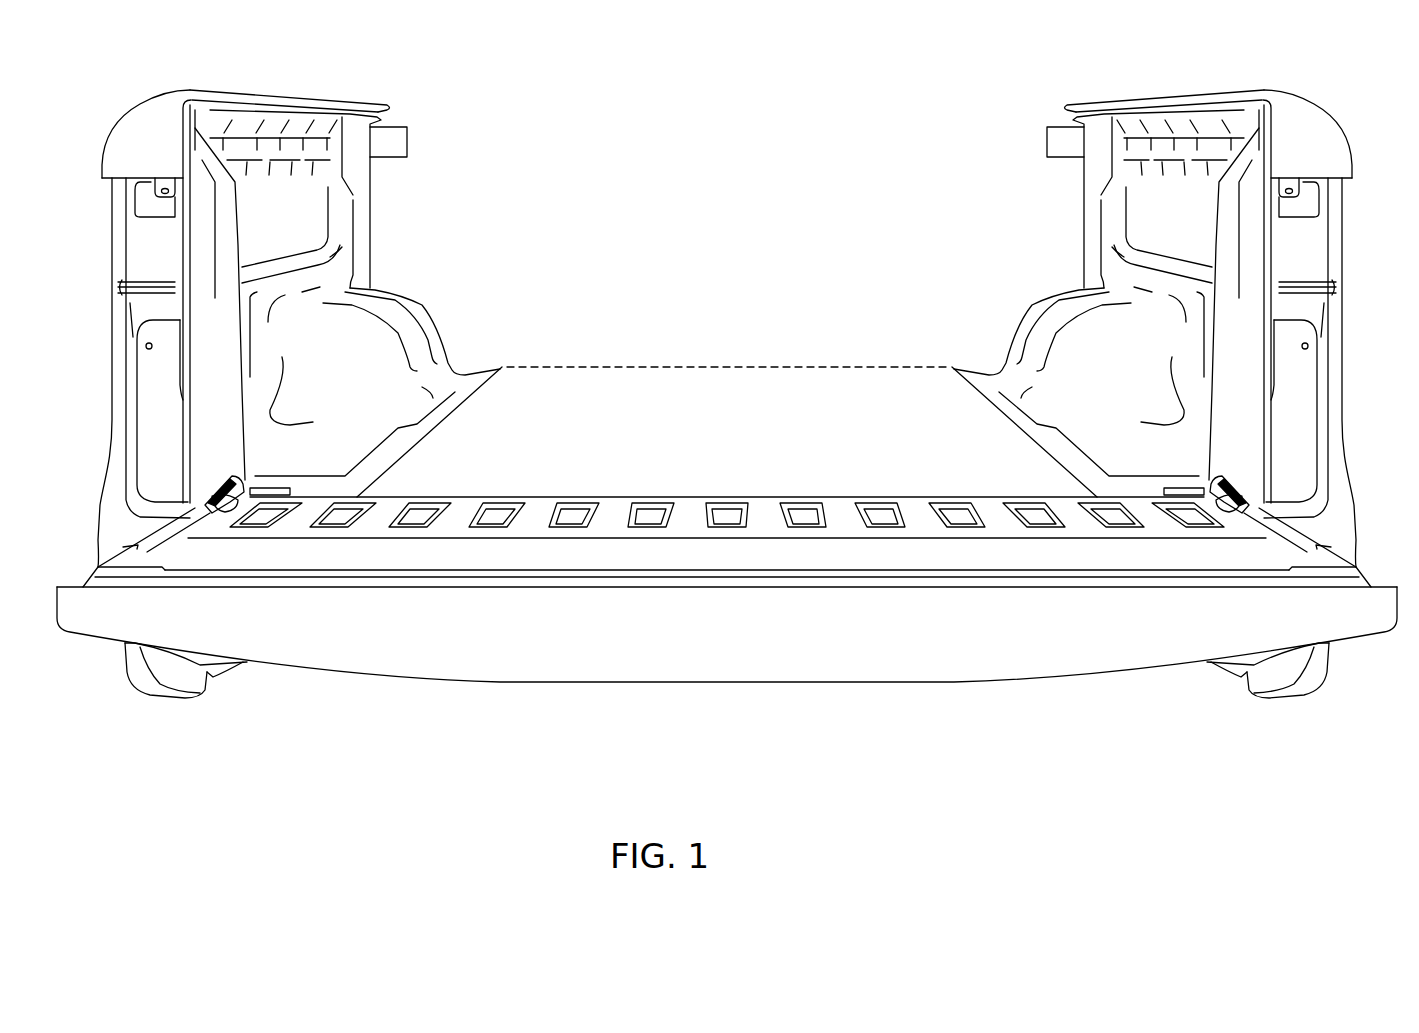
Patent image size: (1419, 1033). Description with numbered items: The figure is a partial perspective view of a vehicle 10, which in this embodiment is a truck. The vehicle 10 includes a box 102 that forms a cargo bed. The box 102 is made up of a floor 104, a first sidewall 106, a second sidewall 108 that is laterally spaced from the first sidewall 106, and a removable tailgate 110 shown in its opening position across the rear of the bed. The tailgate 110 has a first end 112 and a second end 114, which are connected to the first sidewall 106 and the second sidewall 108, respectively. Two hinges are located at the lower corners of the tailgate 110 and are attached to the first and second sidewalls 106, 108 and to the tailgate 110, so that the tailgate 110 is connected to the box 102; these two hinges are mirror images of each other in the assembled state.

The vehicle 10 is at (531, 97).
The box 102 is at (1239, 91).
The floor 104 is at (749, 448).
The first sidewall 106 is at (148, 263).
The second sidewall 108 is at (1306, 263).
The tailgate 110 is at (567, 656).
The first end 112 is at (92, 570).
The second end 114 is at (1362, 570).